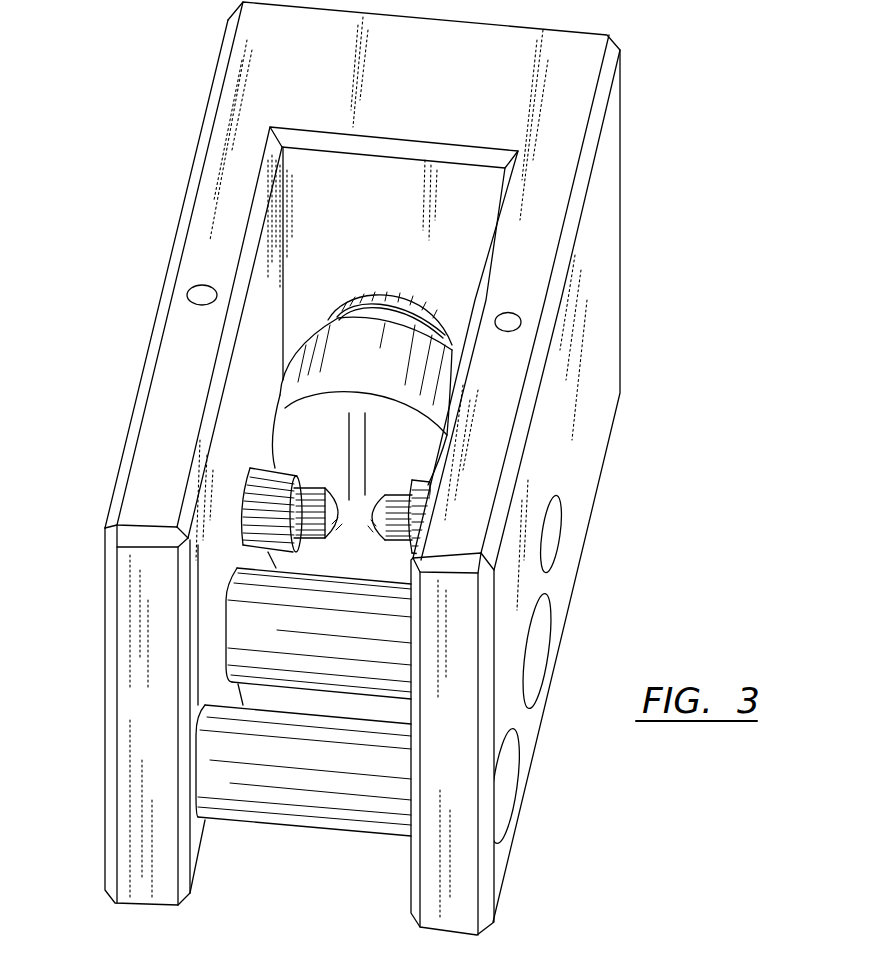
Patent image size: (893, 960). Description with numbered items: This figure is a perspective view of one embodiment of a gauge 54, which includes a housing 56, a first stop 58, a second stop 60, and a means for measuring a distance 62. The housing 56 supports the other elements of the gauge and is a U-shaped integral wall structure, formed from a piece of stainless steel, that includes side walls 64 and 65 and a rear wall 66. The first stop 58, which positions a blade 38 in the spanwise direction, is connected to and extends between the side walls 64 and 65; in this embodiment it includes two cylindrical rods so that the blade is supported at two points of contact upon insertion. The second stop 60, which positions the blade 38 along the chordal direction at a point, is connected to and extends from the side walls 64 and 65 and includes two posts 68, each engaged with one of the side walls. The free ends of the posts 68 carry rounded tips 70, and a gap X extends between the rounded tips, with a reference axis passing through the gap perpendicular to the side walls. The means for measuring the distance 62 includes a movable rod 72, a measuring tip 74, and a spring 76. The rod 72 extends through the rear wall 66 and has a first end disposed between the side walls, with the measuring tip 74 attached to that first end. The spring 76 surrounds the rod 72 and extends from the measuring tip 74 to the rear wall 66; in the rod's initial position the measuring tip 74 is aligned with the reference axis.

The gauge 54 is at (700, 92).
The housing 56 is at (624, 174).
The first stop 58 is at (291, 828).
The second stop 60 is at (237, 493).
The means for measuring a distance 62 is at (446, 303).
The side wall 64 is at (588, 498).
The side wall 65 is at (103, 617).
The rear wall 66 is at (390, 204).
The posts 68 is at (389, 544).
The rounded tips 70 is at (343, 488).
The movable rod 72 is at (378, 297).
The measuring tip 74 is at (365, 363).
The spring 76 is at (357, 302).
The blade 38 is at (808, 959).